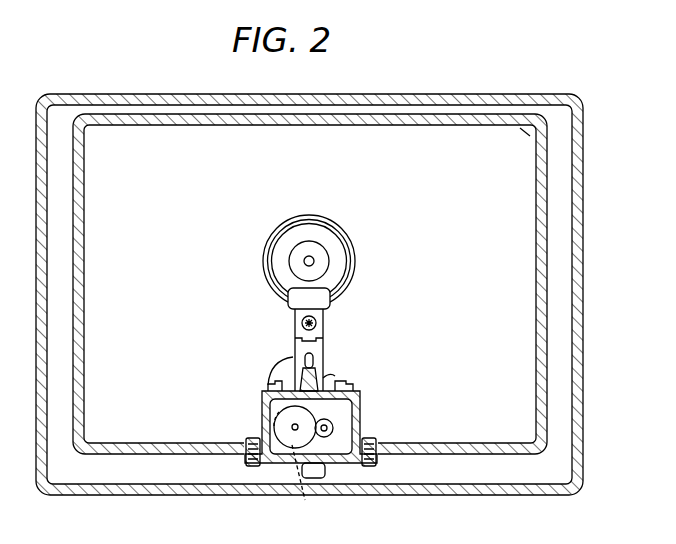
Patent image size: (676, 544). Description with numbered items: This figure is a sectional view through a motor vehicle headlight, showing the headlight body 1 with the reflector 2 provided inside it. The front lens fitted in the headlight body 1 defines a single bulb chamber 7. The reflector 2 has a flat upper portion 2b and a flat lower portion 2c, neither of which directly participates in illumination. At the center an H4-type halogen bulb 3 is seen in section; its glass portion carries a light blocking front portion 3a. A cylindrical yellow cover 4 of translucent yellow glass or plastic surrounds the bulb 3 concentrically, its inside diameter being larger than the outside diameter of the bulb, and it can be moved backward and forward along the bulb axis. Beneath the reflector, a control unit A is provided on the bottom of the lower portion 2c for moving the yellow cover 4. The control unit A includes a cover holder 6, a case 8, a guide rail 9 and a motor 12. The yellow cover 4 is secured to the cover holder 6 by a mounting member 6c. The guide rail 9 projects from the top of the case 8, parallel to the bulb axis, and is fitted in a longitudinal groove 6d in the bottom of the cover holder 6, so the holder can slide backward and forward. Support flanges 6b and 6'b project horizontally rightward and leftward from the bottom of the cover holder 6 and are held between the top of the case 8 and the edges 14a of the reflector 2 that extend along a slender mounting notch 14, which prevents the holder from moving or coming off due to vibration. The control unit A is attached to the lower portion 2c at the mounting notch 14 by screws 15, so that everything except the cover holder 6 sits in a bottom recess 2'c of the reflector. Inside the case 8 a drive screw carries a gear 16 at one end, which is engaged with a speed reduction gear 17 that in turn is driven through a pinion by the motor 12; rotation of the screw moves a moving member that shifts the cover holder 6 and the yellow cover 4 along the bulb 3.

The headlight body 1 is at (505, 96).
The reflector 2 is at (310, 255).
The upper portion 2b is at (242, 126).
The lower portion 2c is at (477, 446).
The bottom recess 2'c is at (256, 487).
The halogen bulb 3 is at (337, 267).
The light blocking front portion 3a is at (325, 252).
The yellow cover 4 is at (339, 226).
The cover holder 6 is at (332, 350).
The support flange 6b is at (262, 392).
The support flange 6'b is at (375, 391).
The mounting member 6c is at (331, 306).
The groove 6d is at (303, 382).
The bulb chamber 7 is at (526, 130).
The case 8 is at (359, 422).
The guide rail 9 is at (327, 378).
The motor 12 is at (331, 448).
The mounting notch 14 is at (335, 376).
The edges 14a is at (293, 367).
The screws 15 is at (247, 465).
The gear 16 is at (273, 411).
The speed reduction gear 17 is at (305, 500).
The control unit A is at (319, 470).